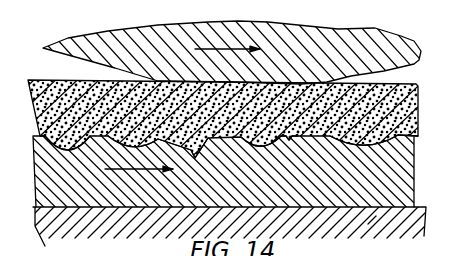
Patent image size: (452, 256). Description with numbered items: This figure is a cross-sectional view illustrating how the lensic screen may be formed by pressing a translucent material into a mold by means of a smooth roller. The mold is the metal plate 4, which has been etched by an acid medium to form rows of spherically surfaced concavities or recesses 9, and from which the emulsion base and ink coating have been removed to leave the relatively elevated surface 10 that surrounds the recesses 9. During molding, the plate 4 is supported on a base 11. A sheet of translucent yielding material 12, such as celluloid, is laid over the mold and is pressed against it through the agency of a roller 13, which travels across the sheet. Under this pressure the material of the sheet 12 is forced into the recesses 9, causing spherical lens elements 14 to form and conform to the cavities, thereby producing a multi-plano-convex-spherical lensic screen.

The roller 13 is at (398, 44).
The sheet of translucent yielding material 12 is at (410, 100).
The spherical lens elements 14 is at (183, 140).
The relatively elevated surface 10 is at (280, 131).
The spherically surfaced concavities or recesses 9 is at (170, 143).
The plate 4 is at (398, 178).
The base 11 is at (362, 212).